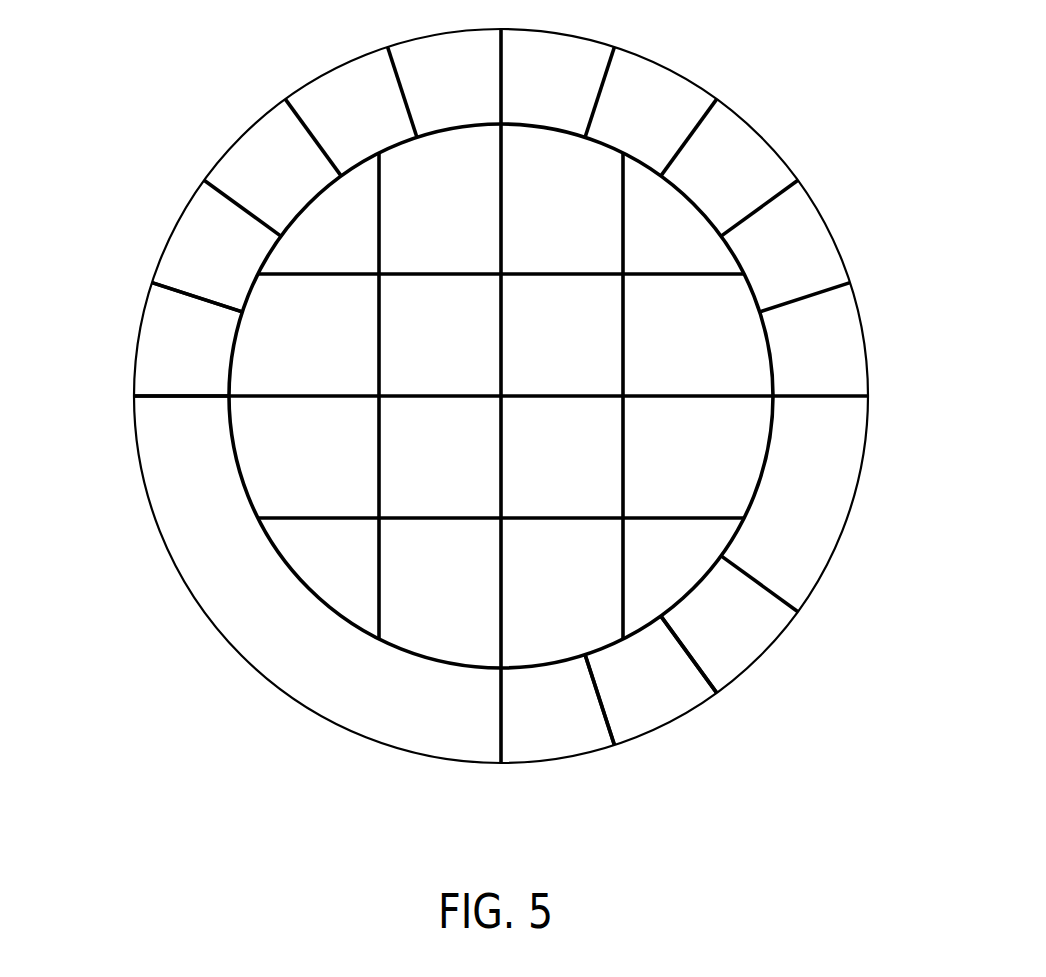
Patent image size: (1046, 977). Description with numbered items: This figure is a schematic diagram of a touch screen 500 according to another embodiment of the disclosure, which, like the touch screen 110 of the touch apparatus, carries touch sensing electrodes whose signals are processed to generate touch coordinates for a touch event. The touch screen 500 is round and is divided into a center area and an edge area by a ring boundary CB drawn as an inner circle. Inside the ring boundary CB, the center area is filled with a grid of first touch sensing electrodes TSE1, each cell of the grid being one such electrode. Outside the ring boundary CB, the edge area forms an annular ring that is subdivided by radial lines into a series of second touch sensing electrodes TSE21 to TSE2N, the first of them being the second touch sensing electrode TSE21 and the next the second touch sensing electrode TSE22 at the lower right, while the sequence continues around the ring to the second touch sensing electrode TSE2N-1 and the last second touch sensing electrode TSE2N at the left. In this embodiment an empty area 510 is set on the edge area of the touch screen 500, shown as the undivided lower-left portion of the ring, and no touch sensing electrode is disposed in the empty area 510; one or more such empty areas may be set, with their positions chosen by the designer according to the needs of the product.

The touch screen 110 is at (667, 64).
The ring boundary CB is at (697, 204).
The touch screen 500 is at (858, 837).
The empty area 510 is at (302, 683).
The first touch sensing electrodes TSE1 is at (501, 396).
The second touch sensing electrode TSE21 is at (662, 710).
The second touch sensing electrode TSE22 is at (748, 645).
The second touch sensing electrode TSE2N-1 is at (188, 232).
The second touch sensing electrode TSE2N is at (162, 336).